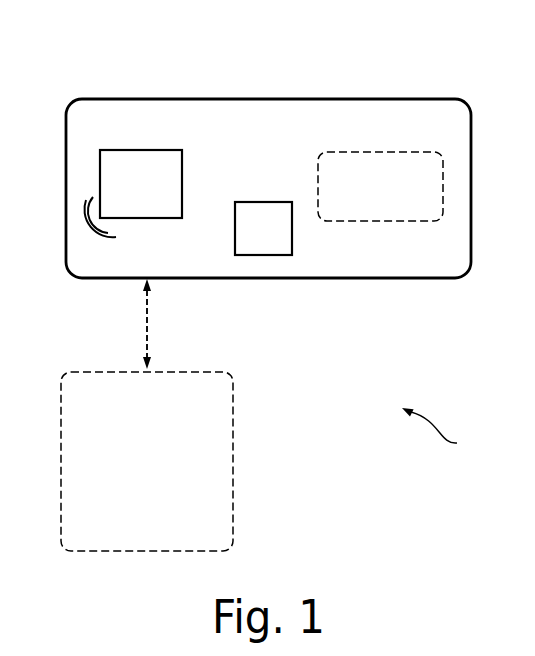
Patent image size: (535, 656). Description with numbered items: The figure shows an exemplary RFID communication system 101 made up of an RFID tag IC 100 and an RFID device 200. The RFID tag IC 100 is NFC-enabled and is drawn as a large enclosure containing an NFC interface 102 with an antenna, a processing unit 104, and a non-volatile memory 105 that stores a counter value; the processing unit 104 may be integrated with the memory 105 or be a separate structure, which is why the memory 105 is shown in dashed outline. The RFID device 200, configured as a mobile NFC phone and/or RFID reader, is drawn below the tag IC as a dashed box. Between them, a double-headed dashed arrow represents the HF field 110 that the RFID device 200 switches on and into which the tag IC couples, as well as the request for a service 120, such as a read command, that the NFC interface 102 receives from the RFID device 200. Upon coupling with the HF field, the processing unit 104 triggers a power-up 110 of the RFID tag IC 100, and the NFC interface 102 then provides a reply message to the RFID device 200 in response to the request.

The RFID tag IC 100 is at (305, 99).
The communication system 101 is at (446, 432).
The NFC interface 102 is at (142, 150).
The processing unit 104 is at (262, 255).
The non-volatile memory 105 is at (377, 221).
The HF field / power-up 110 is at (123, 317).
The request for a service 120 is at (88, 324).
The RFID device 200 is at (233, 449).